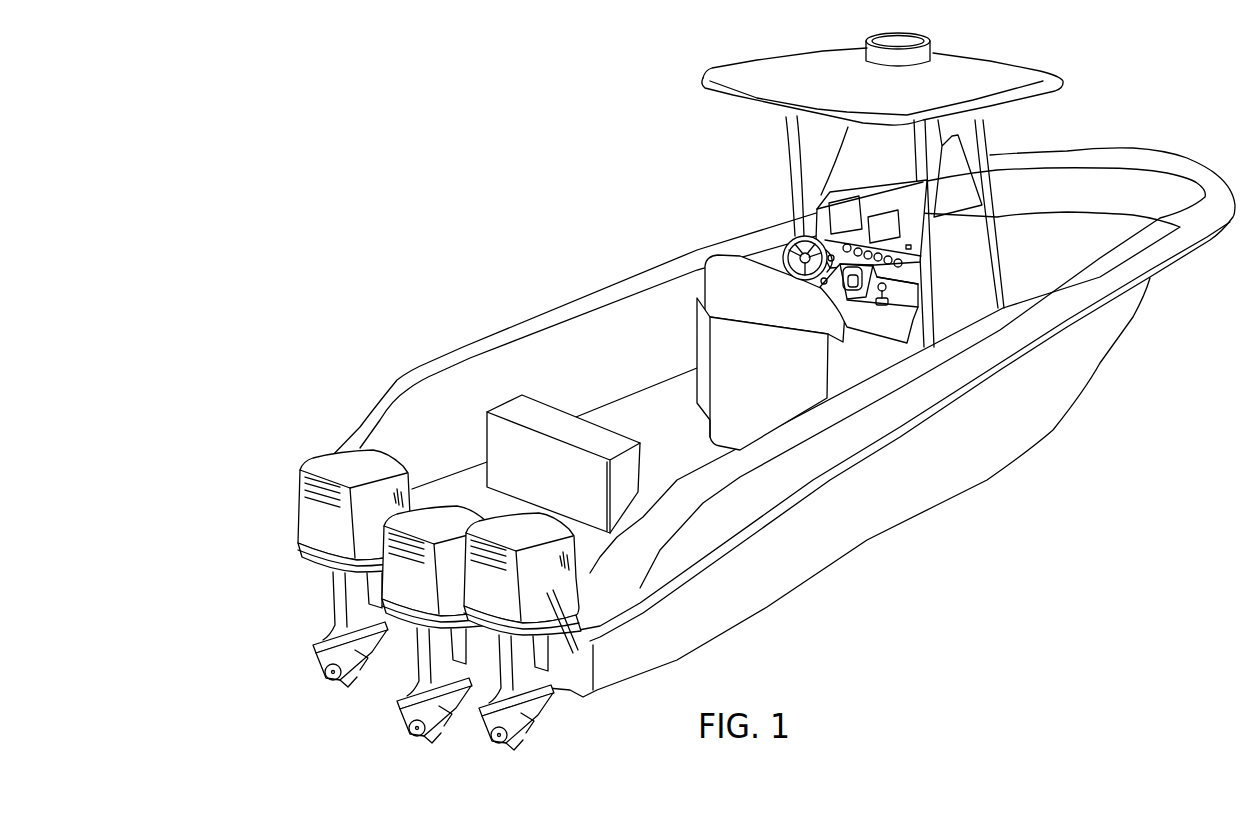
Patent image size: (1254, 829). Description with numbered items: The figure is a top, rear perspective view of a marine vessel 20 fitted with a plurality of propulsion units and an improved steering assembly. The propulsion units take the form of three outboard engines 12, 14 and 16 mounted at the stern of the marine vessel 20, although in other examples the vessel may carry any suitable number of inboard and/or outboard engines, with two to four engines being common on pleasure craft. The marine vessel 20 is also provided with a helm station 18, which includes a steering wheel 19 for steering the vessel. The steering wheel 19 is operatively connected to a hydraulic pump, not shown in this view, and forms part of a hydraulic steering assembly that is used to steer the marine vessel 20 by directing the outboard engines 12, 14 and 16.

The marine vessel 20 is at (385, 281).
The helm station 18 is at (823, 205).
The steering wheel 19 is at (789, 256).
The outboard engine 16 is at (313, 515).
The outboard engine 14 is at (408, 594).
The outboard engine 12 is at (535, 606).